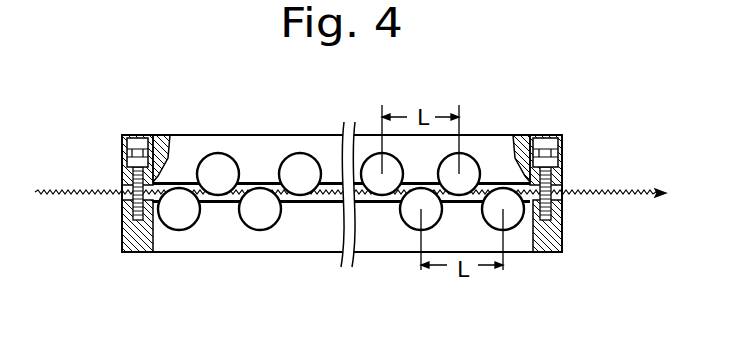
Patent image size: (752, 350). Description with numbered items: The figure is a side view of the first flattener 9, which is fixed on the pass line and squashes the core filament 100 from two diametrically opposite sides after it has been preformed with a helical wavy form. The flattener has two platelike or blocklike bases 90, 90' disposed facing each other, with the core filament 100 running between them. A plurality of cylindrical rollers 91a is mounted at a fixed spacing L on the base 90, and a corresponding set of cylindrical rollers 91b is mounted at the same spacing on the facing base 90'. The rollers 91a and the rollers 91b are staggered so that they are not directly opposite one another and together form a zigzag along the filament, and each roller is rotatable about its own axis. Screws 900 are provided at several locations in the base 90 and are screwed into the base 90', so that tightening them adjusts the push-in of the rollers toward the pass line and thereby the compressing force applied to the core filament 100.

The first flattener 9 is at (122, 252).
The base 90 is at (370, 133).
The base 90' is at (341, 263).
The core filament 100 is at (62, 192).
The cylindrical rollers 91a is at (217, 160).
The cylindrical rollers 91b is at (188, 216).
The screws 900 is at (143, 135).